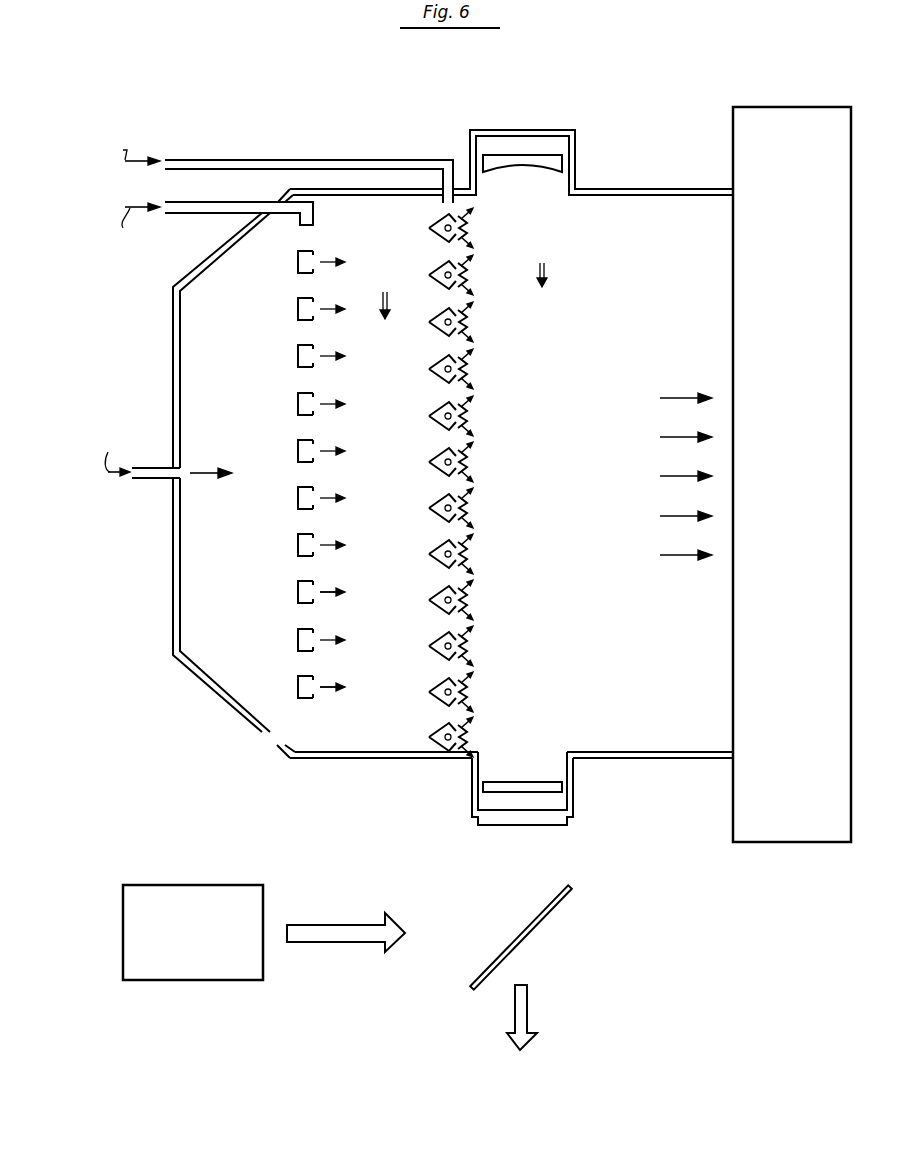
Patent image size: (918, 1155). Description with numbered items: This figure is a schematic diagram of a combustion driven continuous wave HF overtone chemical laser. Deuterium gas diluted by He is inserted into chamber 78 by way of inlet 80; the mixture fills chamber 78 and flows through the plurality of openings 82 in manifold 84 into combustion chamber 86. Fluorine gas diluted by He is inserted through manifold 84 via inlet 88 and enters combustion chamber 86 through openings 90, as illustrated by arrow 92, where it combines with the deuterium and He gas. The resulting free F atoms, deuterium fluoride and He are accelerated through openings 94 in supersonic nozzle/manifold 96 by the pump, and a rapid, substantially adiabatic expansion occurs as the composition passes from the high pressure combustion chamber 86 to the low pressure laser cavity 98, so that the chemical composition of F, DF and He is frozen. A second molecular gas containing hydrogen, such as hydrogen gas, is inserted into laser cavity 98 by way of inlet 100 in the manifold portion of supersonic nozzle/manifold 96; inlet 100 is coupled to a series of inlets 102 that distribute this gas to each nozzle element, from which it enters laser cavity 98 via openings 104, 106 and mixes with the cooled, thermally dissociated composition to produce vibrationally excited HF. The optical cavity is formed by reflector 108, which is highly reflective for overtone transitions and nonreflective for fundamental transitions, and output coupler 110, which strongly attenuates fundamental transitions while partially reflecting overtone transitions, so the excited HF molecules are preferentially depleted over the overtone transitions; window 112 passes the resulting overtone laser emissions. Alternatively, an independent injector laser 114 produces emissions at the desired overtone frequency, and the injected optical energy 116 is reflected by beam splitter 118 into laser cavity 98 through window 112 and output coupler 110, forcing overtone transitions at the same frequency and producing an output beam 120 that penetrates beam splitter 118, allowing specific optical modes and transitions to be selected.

The chamber 78 is at (250, 571).
The inlet 80 is at (155, 480).
The openings 82 is at (300, 468).
The manifold 84 is at (280, 378).
The combustion chamber 86 is at (385, 469).
The inlet 88 is at (183, 213).
The openings 90 is at (343, 604).
The arrow 92 is at (343, 704).
The openings 94 is at (452, 577).
The supersonic nozzle/manifold 96 is at (451, 764).
The laser cavity 98 is at (515, 407).
The inlet 100 is at (303, 158).
The inlets 102 is at (446, 505).
The opening 104 is at (471, 446).
The opening 106 is at (471, 472).
The reflector 108 is at (547, 160).
The output coupler 110 is at (545, 783).
The window 112 is at (550, 820).
The injector laser 114 is at (195, 972).
The injected optical energy 116 is at (326, 943).
The beam splitter 118 is at (538, 927).
The output beam 120 is at (527, 1008).